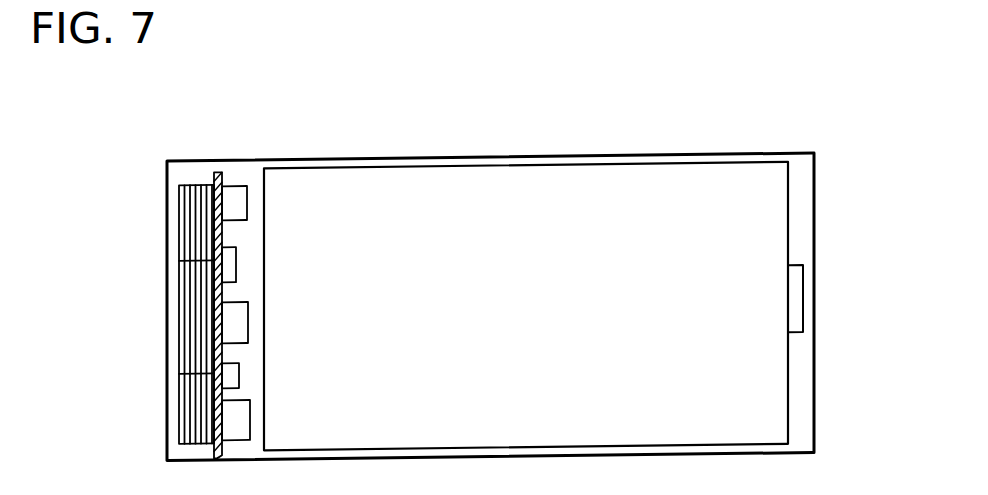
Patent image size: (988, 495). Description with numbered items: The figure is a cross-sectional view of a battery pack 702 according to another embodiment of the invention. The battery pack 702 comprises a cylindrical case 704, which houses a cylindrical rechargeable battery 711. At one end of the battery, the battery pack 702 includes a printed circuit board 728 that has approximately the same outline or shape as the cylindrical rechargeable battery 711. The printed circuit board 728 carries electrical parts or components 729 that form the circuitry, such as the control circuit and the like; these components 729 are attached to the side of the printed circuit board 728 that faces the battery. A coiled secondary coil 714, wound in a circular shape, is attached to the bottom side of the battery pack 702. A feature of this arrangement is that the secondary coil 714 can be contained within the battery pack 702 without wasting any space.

The battery pack 702 is at (733, 129).
The cylindrical case 704 is at (537, 156).
The cylindrical rechargeable battery 711 is at (797, 197).
The secondary coil 714 is at (192, 205).
The printed circuit board 728 is at (222, 287).
The electrical components 729 is at (250, 259).